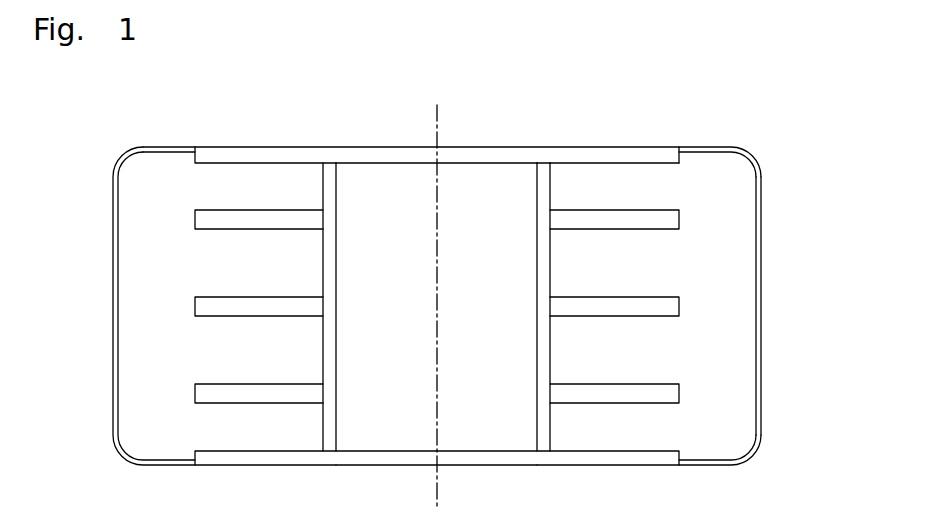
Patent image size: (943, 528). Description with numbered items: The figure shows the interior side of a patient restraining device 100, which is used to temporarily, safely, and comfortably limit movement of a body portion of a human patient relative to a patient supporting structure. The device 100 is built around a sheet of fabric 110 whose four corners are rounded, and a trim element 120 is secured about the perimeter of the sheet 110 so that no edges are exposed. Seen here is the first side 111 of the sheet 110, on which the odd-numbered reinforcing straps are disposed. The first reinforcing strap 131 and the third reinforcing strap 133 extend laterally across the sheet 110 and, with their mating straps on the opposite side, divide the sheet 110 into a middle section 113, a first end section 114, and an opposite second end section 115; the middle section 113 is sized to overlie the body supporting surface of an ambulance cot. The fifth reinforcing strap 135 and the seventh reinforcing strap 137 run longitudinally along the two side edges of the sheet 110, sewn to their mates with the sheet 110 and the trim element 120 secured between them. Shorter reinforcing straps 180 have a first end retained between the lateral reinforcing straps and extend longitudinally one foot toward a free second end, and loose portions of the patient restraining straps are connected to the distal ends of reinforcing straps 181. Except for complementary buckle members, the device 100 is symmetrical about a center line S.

The patient restraining device 100 is at (712, 50).
The sheet of fabric 110 is at (122, 148).
The first side 111 is at (707, 264).
The middle section 113 is at (390, 183).
The first end section 114 is at (175, 170).
The second end section 115 is at (614, 188).
The trim element 120 is at (753, 162).
The first reinforcing strap 131 is at (330, 185).
The third reinforcing strap 133 is at (545, 192).
The fifth reinforcing strap 135 is at (639, 457).
The seventh reinforcing strap 137 is at (661, 153).
The reinforcing strap 180 is at (208, 392).
The reinforcing strap 181 is at (412, 496).
The center line S is at (438, 128).